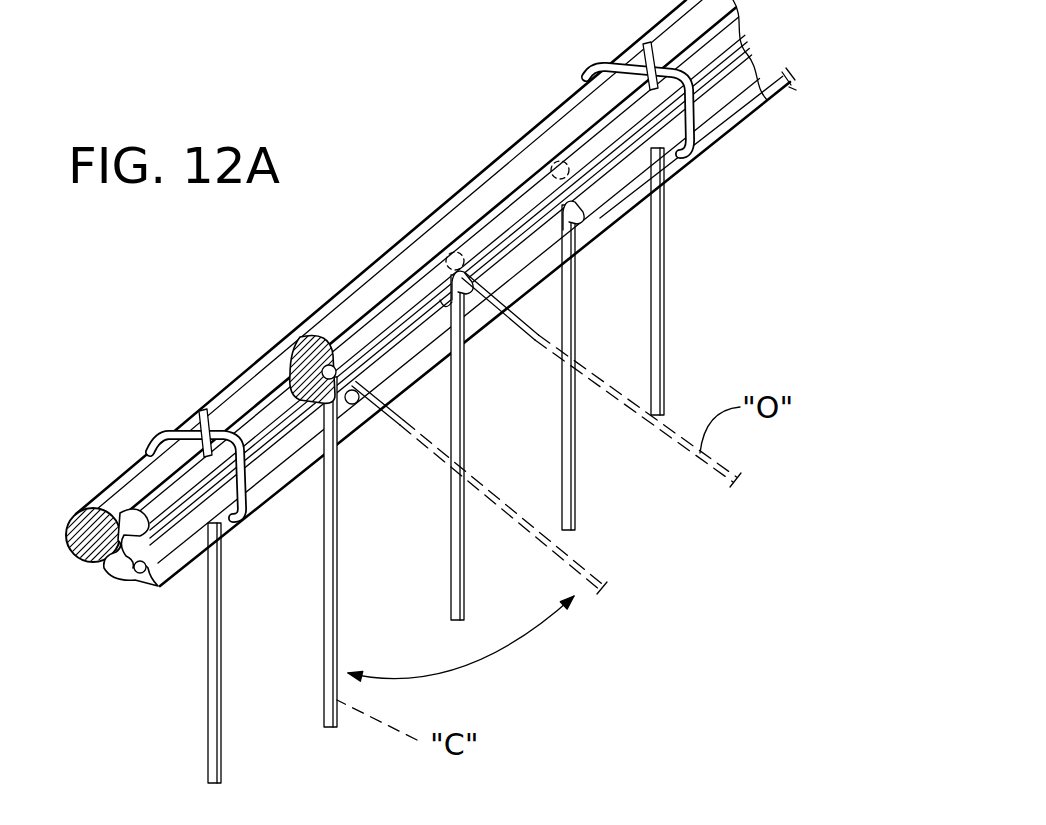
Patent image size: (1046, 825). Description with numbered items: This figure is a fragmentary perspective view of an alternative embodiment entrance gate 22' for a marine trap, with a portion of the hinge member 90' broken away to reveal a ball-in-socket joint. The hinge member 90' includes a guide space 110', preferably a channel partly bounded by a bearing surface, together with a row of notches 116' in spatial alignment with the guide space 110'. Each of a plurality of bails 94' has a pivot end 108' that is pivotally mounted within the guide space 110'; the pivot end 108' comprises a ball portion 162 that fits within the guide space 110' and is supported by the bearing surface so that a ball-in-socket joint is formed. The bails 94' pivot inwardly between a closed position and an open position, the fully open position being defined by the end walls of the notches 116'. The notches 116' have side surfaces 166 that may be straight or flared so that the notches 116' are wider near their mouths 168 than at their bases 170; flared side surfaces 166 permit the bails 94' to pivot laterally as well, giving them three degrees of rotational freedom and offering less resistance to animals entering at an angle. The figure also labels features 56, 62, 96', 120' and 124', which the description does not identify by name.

The entrance gate 22' is at (764, 202).
The tube core 56 is at (78, 554).
The tube 62 is at (110, 478).
The hinge member 90' is at (787, 50).
The bails 94' is at (487, 466).
The support rod 96' is at (477, 465).
The pivot end 108' is at (389, 245).
The guide space 110' is at (428, 311).
The notches 116' is at (556, 356).
The bracket lower portion 120' is at (474, 332).
The bar 124' is at (725, 143).
The ball portion 162 is at (292, 368).
The side surfaces 166 is at (470, 298).
The mouths 168 is at (362, 392).
The bases 170 is at (333, 385).